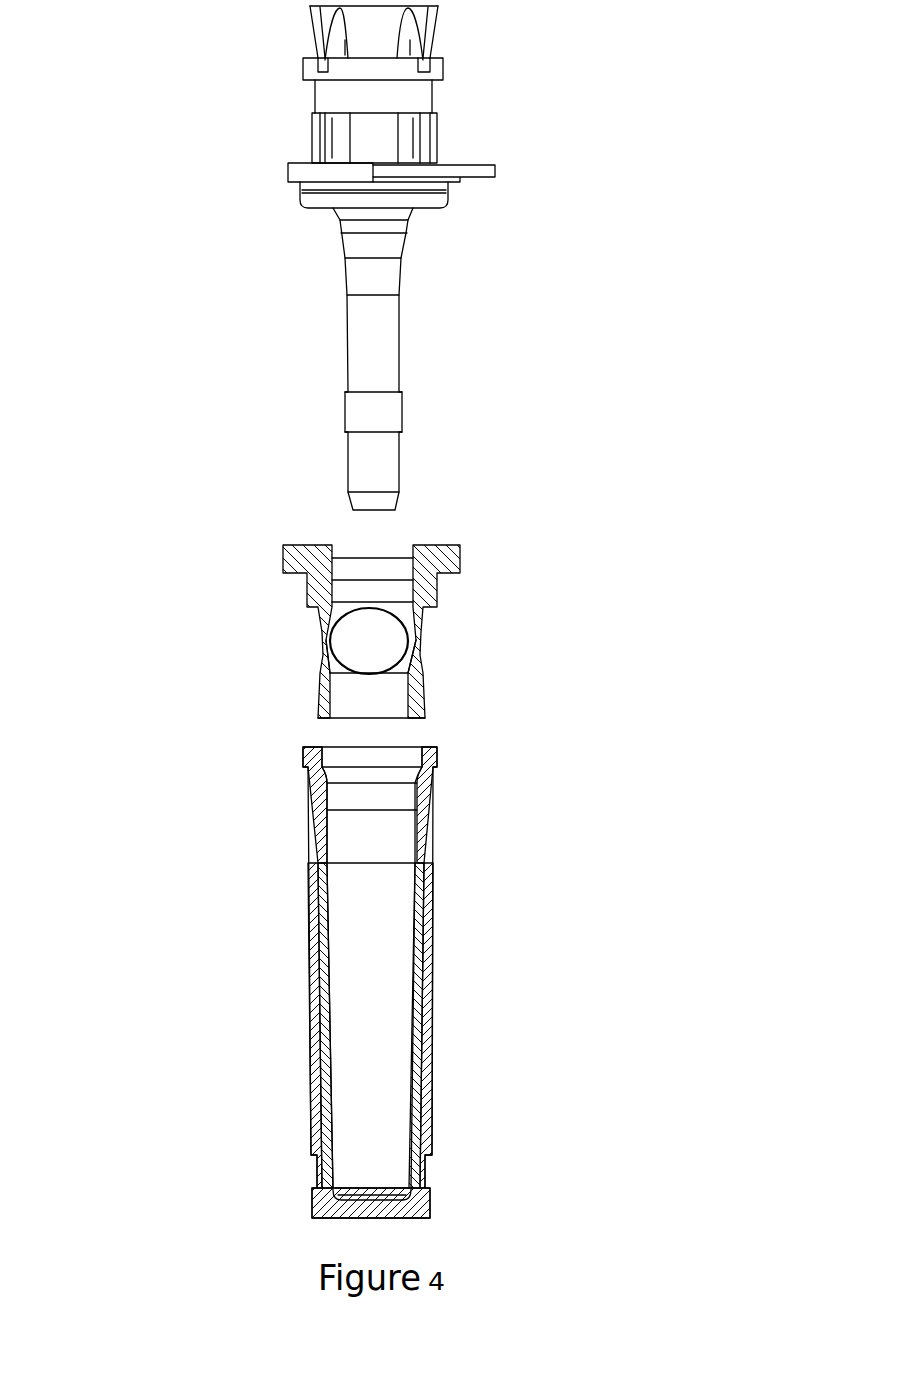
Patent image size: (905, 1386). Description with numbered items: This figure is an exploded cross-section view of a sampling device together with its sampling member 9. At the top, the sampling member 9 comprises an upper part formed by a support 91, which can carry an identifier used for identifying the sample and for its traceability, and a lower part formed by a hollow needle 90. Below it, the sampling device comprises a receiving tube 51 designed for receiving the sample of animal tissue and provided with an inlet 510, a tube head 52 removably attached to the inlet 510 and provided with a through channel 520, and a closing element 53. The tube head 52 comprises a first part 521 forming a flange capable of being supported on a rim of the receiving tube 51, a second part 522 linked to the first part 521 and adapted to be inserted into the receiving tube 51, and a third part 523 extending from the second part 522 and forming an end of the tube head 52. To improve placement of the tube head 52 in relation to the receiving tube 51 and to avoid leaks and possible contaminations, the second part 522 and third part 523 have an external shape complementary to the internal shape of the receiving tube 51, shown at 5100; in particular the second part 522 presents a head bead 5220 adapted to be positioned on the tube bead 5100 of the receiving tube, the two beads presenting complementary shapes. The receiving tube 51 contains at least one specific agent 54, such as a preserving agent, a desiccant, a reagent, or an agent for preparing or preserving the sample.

The sampling member 9 is at (358, 258).
The hollow needle 90 is at (389, 378).
The support 91 is at (462, 167).
The tube head 52 is at (311, 609).
The through channel 520 is at (368, 595).
The first part 521 is at (318, 578).
The second part 522 is at (330, 640).
The head bead 5220 is at (327, 667).
The third part 523 is at (327, 697).
The closing element 53 is at (392, 640).
The receiving tube 51 is at (324, 942).
The inlet 510 is at (387, 773).
The tube bead 5100 is at (320, 800).
The specific agent 54 is at (377, 957).